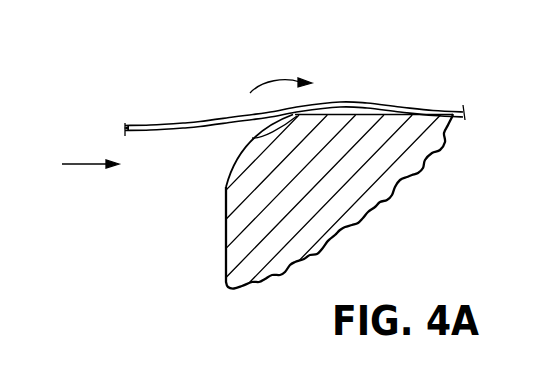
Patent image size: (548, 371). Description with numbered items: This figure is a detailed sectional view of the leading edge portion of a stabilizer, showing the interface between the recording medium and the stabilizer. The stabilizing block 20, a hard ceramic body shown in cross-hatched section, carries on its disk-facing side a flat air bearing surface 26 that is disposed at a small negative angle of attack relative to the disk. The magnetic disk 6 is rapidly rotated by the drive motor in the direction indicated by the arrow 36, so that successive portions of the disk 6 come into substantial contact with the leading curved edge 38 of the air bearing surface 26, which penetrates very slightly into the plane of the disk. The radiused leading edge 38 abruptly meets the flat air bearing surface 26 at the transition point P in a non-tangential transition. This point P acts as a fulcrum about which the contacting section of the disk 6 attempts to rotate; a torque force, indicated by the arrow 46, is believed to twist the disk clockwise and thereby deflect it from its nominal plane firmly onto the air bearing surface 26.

The magnetic disk 6 is at (183, 123).
The stabilizing block 20 is at (227, 240).
The flat air bearing surface 26 is at (367, 114).
The direction of disk rotation arrow 36 is at (65, 163).
The leading curved edge 38 is at (232, 160).
The torque force arrow 46 is at (258, 85).
The transition point P is at (250, 137).